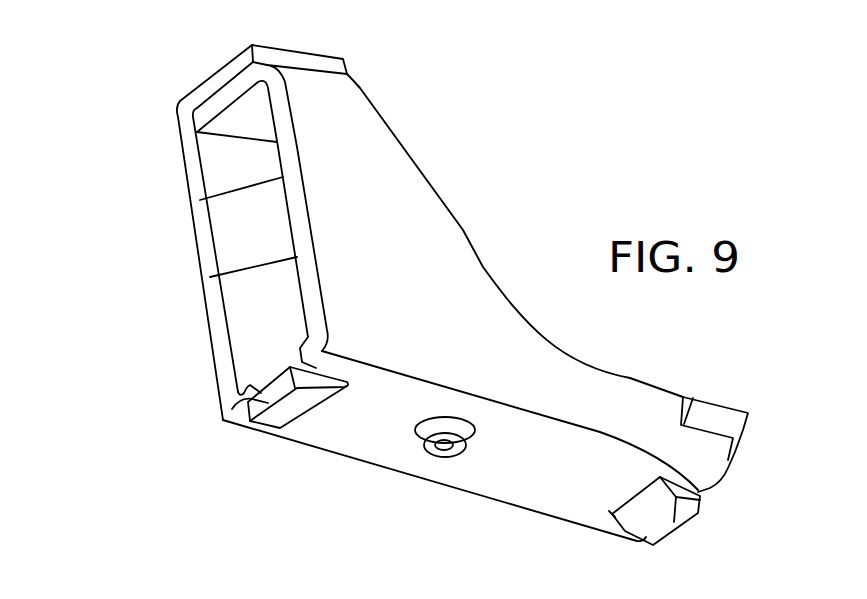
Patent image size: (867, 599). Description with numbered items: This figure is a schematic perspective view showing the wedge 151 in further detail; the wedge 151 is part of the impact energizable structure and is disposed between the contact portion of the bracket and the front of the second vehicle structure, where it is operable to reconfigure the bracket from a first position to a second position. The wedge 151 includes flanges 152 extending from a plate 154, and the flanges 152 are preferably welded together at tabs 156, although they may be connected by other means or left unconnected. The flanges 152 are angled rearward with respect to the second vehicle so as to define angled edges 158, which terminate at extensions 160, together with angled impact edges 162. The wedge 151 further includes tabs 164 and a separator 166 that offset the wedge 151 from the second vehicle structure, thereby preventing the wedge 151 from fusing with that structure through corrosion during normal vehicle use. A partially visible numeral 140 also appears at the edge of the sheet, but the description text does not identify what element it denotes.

The frame member 140 is at (613, 2).
The wedge 151 is at (94, 125).
The flanges 152 is at (192, 238).
The plate 154 is at (369, 416).
The tabs 156 is at (212, 94).
The angled edges 158 is at (451, 206).
The extensions 160 is at (637, 378).
The angled impact edges 162 is at (200, 200).
The tabs 164 is at (223, 421).
The separator 166 is at (442, 458).